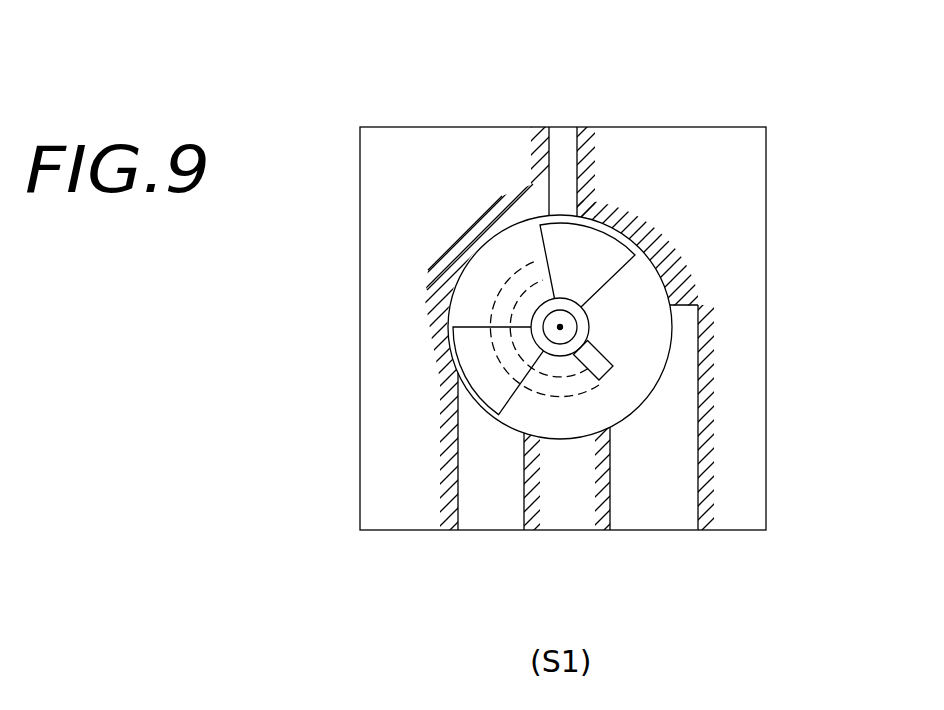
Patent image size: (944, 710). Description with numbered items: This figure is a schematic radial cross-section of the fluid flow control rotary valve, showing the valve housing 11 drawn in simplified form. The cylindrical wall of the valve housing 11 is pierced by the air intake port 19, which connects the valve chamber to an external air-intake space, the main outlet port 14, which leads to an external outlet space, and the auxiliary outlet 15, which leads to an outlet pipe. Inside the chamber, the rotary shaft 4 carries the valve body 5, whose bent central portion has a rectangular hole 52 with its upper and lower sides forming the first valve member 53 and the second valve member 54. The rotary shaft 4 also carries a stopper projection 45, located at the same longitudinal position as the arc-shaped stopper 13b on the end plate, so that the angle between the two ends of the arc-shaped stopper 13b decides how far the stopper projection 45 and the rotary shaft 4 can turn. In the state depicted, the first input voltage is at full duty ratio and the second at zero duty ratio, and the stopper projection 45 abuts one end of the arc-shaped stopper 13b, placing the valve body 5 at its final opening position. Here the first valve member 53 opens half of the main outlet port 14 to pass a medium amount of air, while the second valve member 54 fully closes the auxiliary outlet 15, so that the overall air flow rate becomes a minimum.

The valve housing 11 is at (745, 187).
The auxiliary outlet 15 is at (568, 140).
The main outlet port 14 is at (490, 513).
The air intake port 19 is at (648, 513).
The valve body 5 is at (425, 346).
The rectangular hole 52 is at (465, 302).
The arc-shaped stopper 13b is at (510, 281).
The rotary shaft 4 is at (560, 327).
The second valve member 54 is at (595, 243).
The first valve member 53 is at (483, 369).
The stopper projection 45 is at (590, 353).